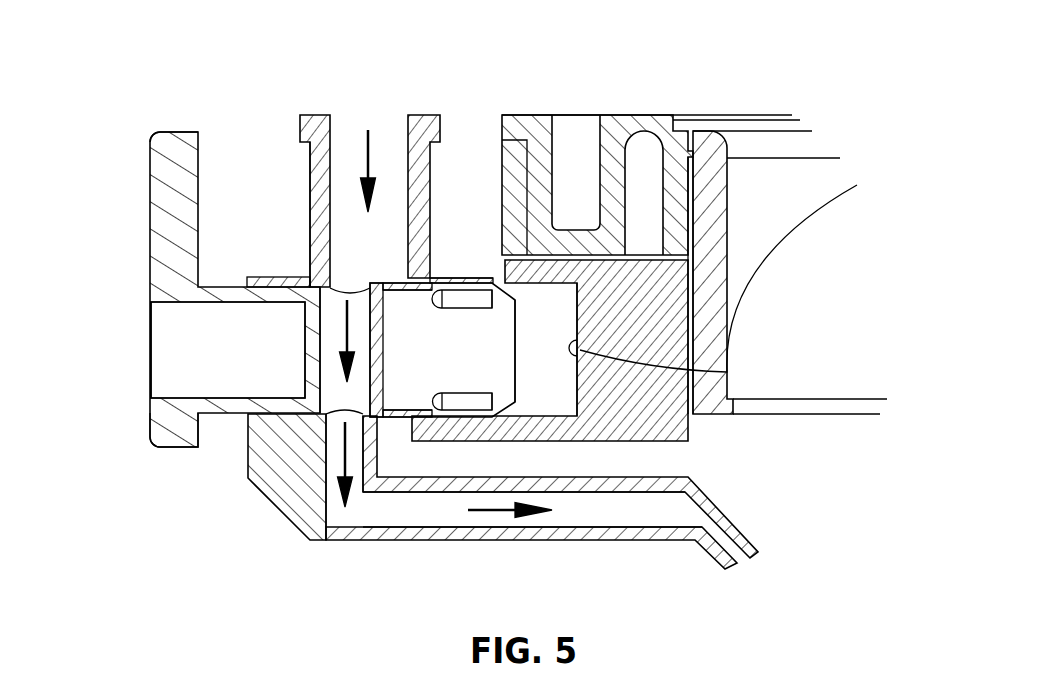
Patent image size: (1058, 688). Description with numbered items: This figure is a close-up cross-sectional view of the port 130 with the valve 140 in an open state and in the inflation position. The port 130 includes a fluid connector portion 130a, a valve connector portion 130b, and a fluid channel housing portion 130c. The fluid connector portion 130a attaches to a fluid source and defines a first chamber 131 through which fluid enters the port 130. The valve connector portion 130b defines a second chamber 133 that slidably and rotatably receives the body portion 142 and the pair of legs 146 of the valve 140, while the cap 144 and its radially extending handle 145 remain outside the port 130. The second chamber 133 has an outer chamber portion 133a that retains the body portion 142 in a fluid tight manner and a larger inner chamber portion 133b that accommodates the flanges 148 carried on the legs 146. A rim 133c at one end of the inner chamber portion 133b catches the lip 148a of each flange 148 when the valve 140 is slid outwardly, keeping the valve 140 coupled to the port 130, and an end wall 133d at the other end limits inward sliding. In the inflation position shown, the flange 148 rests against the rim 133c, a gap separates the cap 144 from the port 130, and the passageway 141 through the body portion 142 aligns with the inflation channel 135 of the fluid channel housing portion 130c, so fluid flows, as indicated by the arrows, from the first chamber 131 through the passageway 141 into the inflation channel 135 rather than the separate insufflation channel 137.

The port 130 is at (227, 43).
The valve 140 is at (131, 113).
The fluid connector portion 130a is at (308, 182).
The first chamber 131 is at (392, 150).
The valve connector portion 130b is at (275, 276).
The handle 145 is at (150, 210).
The cap 144 is at (150, 420).
The body portion 142 is at (250, 408).
The passageway 141 is at (335, 385).
The fluid channel housing portion 130c is at (284, 512).
The inflation channel 135 is at (372, 508).
The insufflation channel 137 is at (420, 463).
The legs 146 is at (457, 303).
The flange 148 is at (540, 420).
The lip 148a is at (493, 283).
The second chamber 133 is at (577, 394).
The outer chamber portion 133a is at (480, 430).
The inner chamber portion 133b is at (518, 432).
The rim 133c is at (457, 287).
The end wall 133d is at (683, 363).